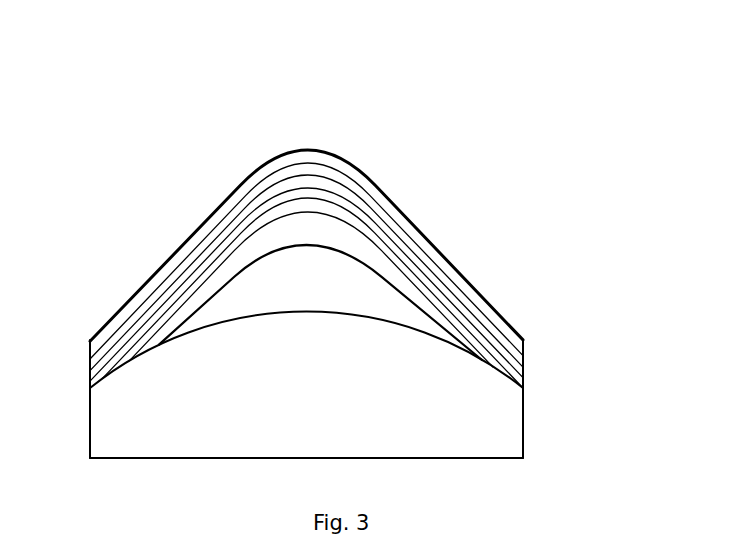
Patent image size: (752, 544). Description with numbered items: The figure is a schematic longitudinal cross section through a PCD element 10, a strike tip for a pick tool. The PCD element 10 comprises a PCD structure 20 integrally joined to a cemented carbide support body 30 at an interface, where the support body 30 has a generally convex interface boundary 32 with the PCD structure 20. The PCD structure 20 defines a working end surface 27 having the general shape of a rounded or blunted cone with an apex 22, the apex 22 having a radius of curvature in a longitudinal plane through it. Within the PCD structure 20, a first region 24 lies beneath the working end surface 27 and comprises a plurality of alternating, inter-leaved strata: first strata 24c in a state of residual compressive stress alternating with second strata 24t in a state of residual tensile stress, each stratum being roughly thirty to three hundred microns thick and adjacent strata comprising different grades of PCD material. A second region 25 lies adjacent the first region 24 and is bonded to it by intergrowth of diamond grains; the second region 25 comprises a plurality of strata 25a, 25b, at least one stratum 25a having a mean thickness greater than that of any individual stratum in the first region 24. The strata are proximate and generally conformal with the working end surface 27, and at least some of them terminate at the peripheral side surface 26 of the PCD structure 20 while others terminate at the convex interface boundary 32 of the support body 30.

The PCD element 10 is at (130, 130).
The PCD structure 20 is at (367, 177).
The apex 22 is at (313, 147).
The first region 24 is at (309, 214).
The first strata 24c is at (314, 167).
The second strata 24t is at (313, 181).
The second region 25 is at (306, 279).
The stratum 25a is at (282, 276).
The stratum 25b is at (290, 229).
The peripheral side surface 26 is at (523, 357).
The working end surface 27 is at (462, 276).
The cemented carbide support body 30 is at (523, 416).
The interface boundary 32 is at (420, 331).